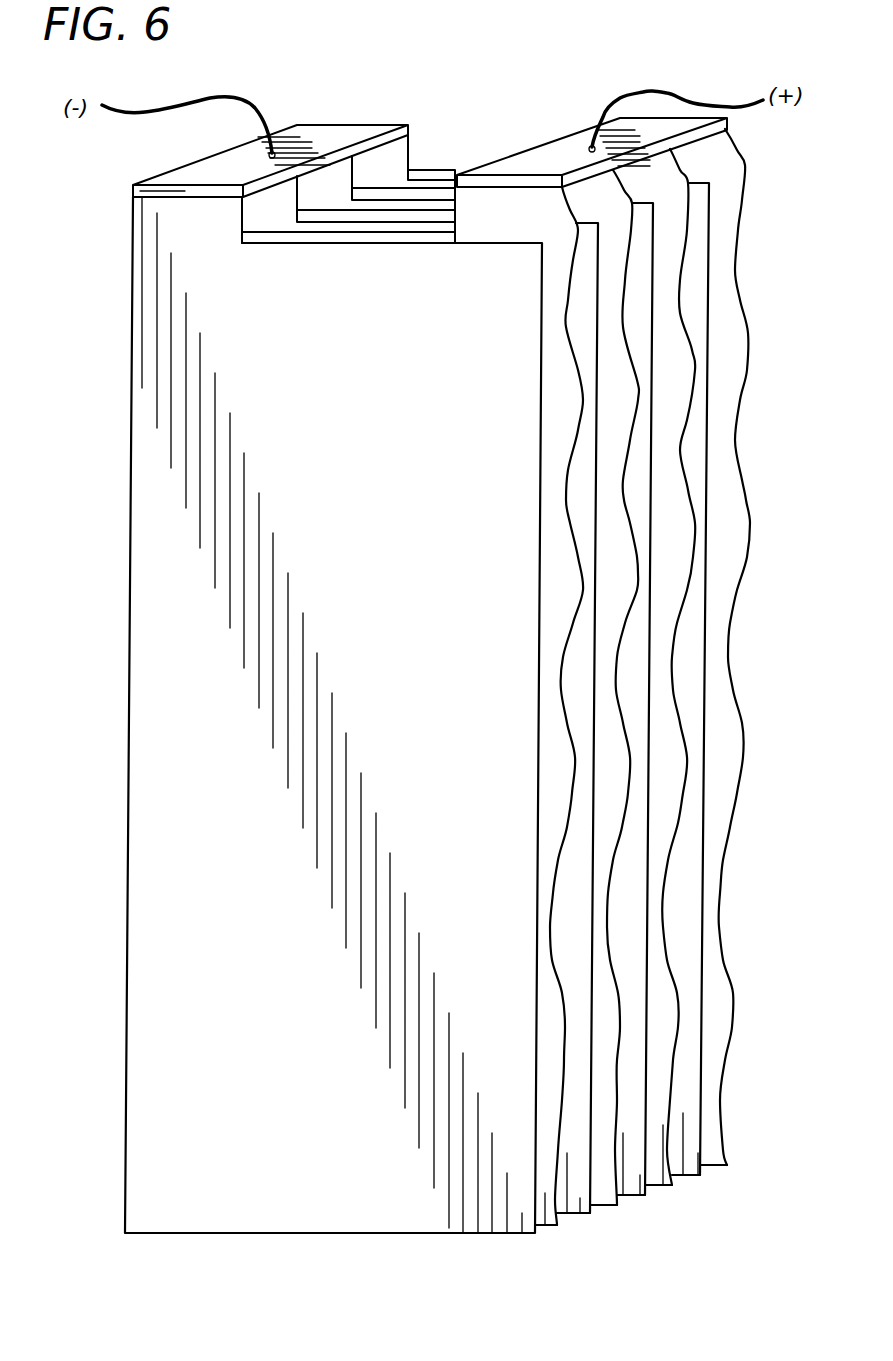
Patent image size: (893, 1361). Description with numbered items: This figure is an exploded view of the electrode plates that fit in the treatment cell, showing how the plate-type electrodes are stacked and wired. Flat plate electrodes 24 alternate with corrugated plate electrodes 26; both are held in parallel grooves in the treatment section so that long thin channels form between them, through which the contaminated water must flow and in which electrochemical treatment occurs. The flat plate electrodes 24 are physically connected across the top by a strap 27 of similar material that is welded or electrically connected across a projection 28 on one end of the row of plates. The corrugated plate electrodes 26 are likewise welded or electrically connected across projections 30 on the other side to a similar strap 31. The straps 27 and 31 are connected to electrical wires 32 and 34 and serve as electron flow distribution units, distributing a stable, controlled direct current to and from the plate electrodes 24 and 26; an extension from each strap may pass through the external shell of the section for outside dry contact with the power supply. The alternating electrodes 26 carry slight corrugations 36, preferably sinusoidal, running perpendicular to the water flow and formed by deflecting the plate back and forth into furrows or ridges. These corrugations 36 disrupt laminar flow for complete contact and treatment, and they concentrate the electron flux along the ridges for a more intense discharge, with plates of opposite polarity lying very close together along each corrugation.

The flat plate electrodes 24 is at (533, 1237).
The corrugated plate electrodes 26 is at (713, 1095).
The strap 27 is at (183, 178).
The projection 28 is at (393, 152).
The projections 30 is at (530, 235).
The strap 31 is at (565, 145).
The electrical wire 32 is at (238, 100).
The electrical wire 34 is at (667, 93).
The corrugations 36 is at (730, 828).